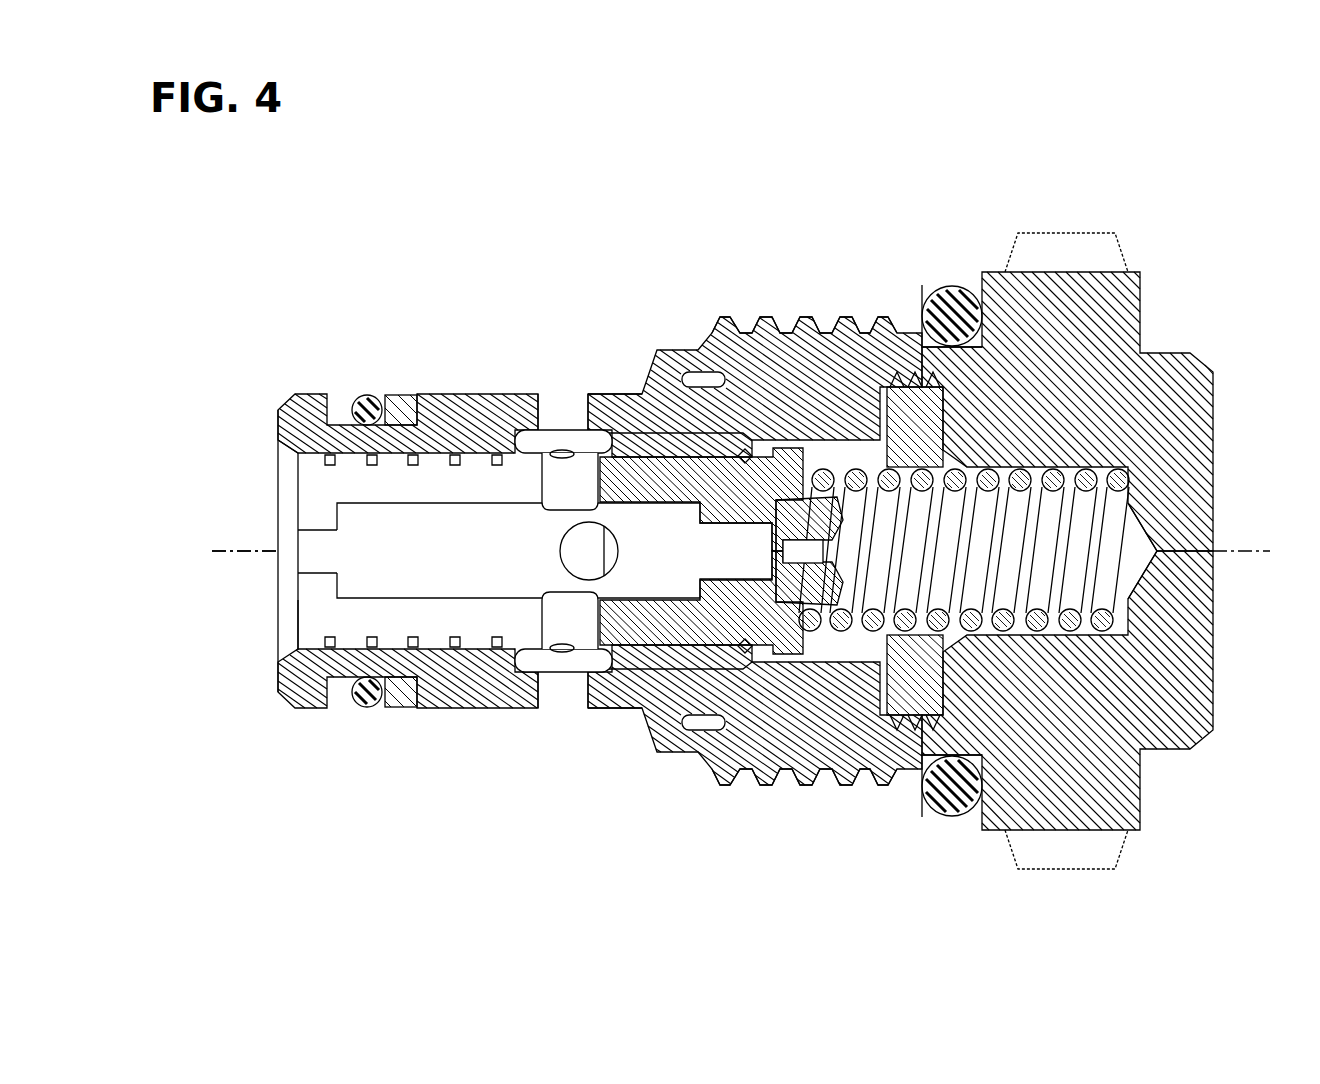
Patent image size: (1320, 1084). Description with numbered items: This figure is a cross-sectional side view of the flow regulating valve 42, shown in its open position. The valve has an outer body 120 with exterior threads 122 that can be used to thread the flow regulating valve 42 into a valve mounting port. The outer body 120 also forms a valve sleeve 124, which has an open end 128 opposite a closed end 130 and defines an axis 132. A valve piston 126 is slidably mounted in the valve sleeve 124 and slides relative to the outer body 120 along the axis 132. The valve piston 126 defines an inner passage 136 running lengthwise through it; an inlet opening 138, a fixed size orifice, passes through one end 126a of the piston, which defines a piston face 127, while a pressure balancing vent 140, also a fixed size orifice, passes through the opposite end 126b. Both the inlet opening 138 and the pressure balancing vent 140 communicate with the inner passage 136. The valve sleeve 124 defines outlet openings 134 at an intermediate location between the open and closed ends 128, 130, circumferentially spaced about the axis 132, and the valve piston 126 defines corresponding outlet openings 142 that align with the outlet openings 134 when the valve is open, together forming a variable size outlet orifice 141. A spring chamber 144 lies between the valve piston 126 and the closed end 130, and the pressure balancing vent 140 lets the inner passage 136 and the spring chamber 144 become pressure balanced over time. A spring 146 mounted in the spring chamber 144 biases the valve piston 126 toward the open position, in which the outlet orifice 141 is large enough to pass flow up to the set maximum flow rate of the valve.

The flow regulating valve 42 is at (320, 300).
The outer body 120 is at (1072, 231).
The exterior threads 122 is at (757, 318).
The valve sleeve 124 is at (443, 393).
The valve piston 126 is at (298, 622).
The end of the valve piston 126a is at (296, 503).
The opposite end of the valve piston 126b is at (795, 602).
The piston face 127 is at (296, 595).
The open end 128 is at (283, 446).
The closed end 130 is at (1148, 533).
The axis 132 is at (222, 553).
The outlet openings of the valve sleeve 134 is at (582, 392).
The inner passage 136 is at (443, 502).
The inlet opening 138 is at (298, 547).
The pressure balancing vent 140 is at (826, 602).
The variable size outlet orifice 141 is at (558, 394).
The outlet openings of the valve piston 142 is at (548, 483).
The spring chamber 144 is at (1085, 632).
The spring 146 is at (947, 815).